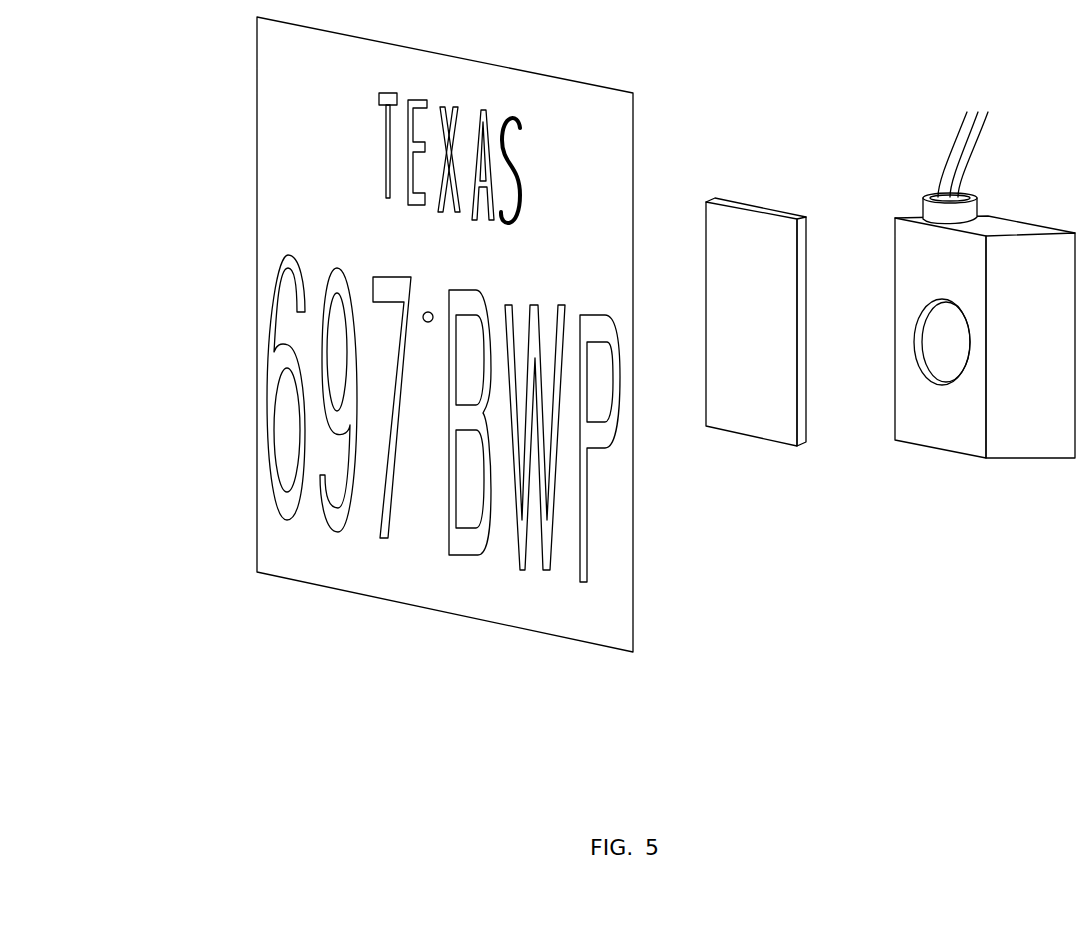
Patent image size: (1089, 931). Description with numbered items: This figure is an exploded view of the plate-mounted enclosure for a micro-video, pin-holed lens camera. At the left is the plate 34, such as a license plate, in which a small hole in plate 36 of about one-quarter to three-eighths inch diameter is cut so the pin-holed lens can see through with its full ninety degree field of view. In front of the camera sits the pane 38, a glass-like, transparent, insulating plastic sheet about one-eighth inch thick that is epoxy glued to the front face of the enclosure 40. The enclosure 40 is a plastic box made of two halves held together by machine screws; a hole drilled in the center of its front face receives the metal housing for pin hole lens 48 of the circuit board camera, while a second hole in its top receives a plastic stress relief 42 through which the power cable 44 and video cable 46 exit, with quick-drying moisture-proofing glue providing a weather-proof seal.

The plate 34 is at (257, 55).
The hole in plate 36 is at (430, 297).
The pane 38 is at (767, 440).
The enclosure 40 is at (1011, 460).
The stress relief 42 is at (928, 194).
The power cable 44 is at (957, 148).
The video cable 46 is at (988, 125).
The metal housing for pin hole lens 48 is at (941, 314).